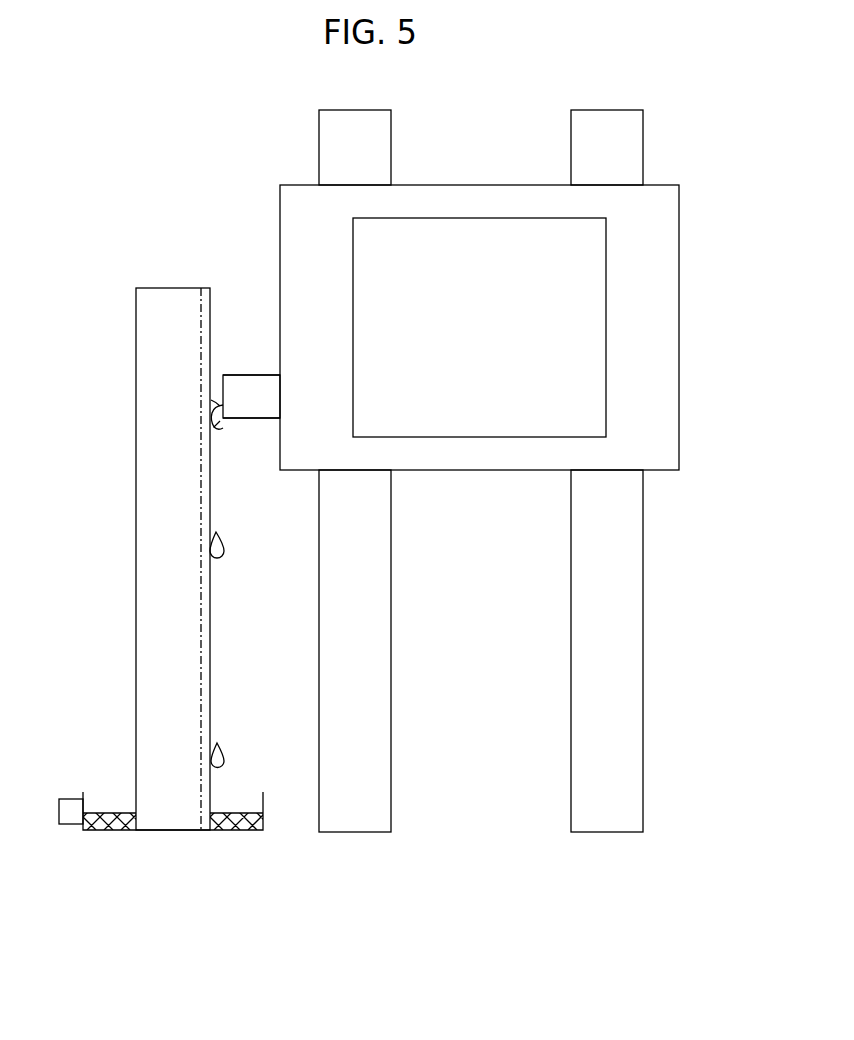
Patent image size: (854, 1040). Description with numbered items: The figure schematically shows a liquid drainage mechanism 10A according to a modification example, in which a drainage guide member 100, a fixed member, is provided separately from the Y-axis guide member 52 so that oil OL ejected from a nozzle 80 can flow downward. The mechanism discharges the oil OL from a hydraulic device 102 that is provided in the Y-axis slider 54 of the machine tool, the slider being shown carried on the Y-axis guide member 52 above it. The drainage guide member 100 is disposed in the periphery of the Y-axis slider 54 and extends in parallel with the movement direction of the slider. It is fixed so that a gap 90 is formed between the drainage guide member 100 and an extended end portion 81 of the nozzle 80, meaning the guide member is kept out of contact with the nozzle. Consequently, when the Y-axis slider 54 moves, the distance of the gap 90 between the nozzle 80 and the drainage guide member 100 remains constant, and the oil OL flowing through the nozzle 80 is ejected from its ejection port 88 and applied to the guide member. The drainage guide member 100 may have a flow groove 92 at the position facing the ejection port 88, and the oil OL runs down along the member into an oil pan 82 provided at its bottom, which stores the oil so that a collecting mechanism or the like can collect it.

The Y-axis guide member 52 is at (338, 133).
The Y-axis slider 54 is at (665, 247).
The hydraulic device 102 is at (577, 358).
The nozzle 80 is at (314, 392).
The extended end portion 81 is at (247, 422).
The liquid drainage mechanism 10A is at (255, 371).
The drainage guide member 100 is at (136, 337).
The flow groove 92 is at (203, 622).
The gap 90 is at (220, 395).
The ejection port 88 is at (222, 410).
The oil OL is at (225, 545).
The oil pan 82 is at (118, 831).